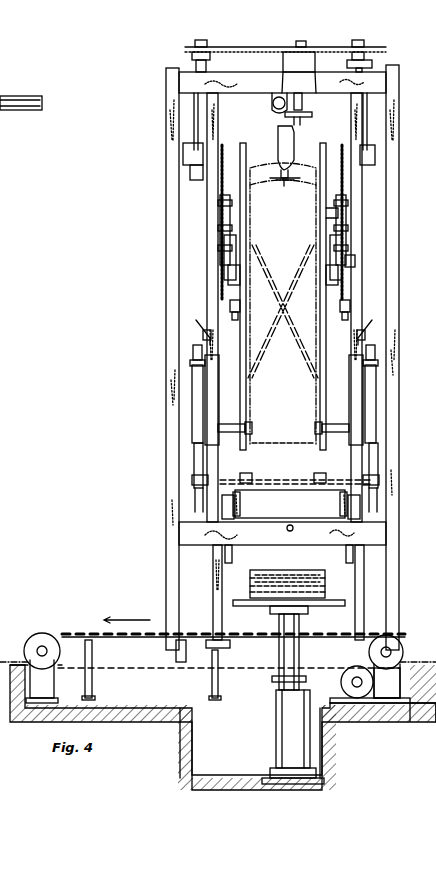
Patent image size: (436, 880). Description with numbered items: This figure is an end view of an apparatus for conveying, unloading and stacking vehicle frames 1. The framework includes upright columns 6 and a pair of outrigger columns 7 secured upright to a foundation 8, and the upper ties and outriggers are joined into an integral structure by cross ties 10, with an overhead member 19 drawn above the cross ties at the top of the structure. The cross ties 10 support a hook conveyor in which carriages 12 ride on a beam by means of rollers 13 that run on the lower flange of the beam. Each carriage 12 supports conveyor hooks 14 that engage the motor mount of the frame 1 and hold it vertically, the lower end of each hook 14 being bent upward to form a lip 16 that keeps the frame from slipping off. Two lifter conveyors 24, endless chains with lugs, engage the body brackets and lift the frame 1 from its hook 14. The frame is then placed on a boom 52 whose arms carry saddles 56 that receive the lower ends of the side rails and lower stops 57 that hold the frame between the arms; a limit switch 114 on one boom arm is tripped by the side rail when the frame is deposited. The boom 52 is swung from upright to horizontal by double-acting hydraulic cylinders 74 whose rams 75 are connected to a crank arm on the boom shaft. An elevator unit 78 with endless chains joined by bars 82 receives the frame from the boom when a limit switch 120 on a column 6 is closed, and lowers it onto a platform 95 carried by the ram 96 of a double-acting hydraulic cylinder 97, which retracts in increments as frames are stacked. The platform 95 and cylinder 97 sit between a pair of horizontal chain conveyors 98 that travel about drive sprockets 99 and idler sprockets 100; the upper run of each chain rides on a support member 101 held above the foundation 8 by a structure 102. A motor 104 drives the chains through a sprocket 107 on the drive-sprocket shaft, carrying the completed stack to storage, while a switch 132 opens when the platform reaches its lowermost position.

The vehicle frame 1 is at (254, 212).
The upright column 6 is at (212, 578).
The outrigger column 7 is at (178, 571).
The foundation 8 is at (218, 655).
The cross tie 10 is at (238, 93).
The carriage 12 is at (284, 115).
The roller 13 is at (271, 101).
The conveyor hook 14 is at (294, 150).
The lip 16 is at (287, 188).
The top bar and hanger 19 is at (282, 80).
The lifter conveyor 24 is at (213, 203).
The boom 52 is at (368, 324).
The saddle 56 is at (268, 470).
The lower stop 57 is at (313, 424).
The double-acting hydraulic cylinder 74 is at (192, 385).
The ram 75 is at (205, 475).
The elevator unit 78 is at (258, 564).
The bar 82 is at (288, 498).
The platform 95 is at (310, 604).
The ram 96 is at (300, 658).
The double-acting hydraulic cylinder 97 is at (278, 728).
The horizontal chain conveyor 98 is at (60, 634).
The drive sprocket 99 is at (400, 640).
The idler sprocket 100 is at (40, 640).
The support member 101 is at (233, 644).
The supporting structure 102 is at (92, 682).
The motor 104 is at (362, 700).
The sprocket 107 is at (400, 652).
The limit switch 114 is at (326, 211).
The limit switch 120 is at (293, 530).
The switch 132 is at (232, 646).